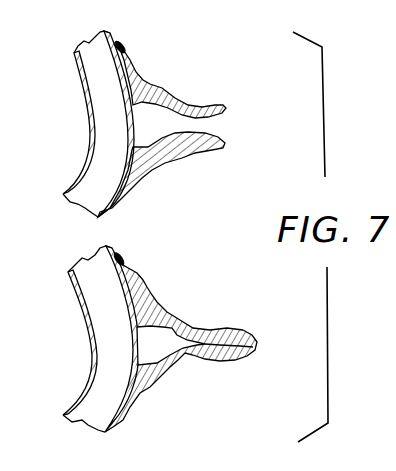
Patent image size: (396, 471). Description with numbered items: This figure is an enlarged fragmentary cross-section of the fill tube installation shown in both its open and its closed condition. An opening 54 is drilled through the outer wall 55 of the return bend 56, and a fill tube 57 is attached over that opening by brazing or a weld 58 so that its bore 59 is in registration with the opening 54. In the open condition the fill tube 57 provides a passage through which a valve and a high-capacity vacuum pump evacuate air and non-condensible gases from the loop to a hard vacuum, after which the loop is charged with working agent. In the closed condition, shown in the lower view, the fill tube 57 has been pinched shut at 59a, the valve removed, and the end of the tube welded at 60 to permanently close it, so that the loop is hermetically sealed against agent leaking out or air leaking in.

The opening 54 is at (127, 125).
The outer wall 55 is at (125, 291).
The bend 56 is at (116, 67).
The fill tube 57 is at (160, 87).
The weld 58 is at (120, 45).
The bore 59 is at (157, 122).
The pinched shut portion 59a is at (207, 349).
The welded fill tube end 60 is at (253, 335).